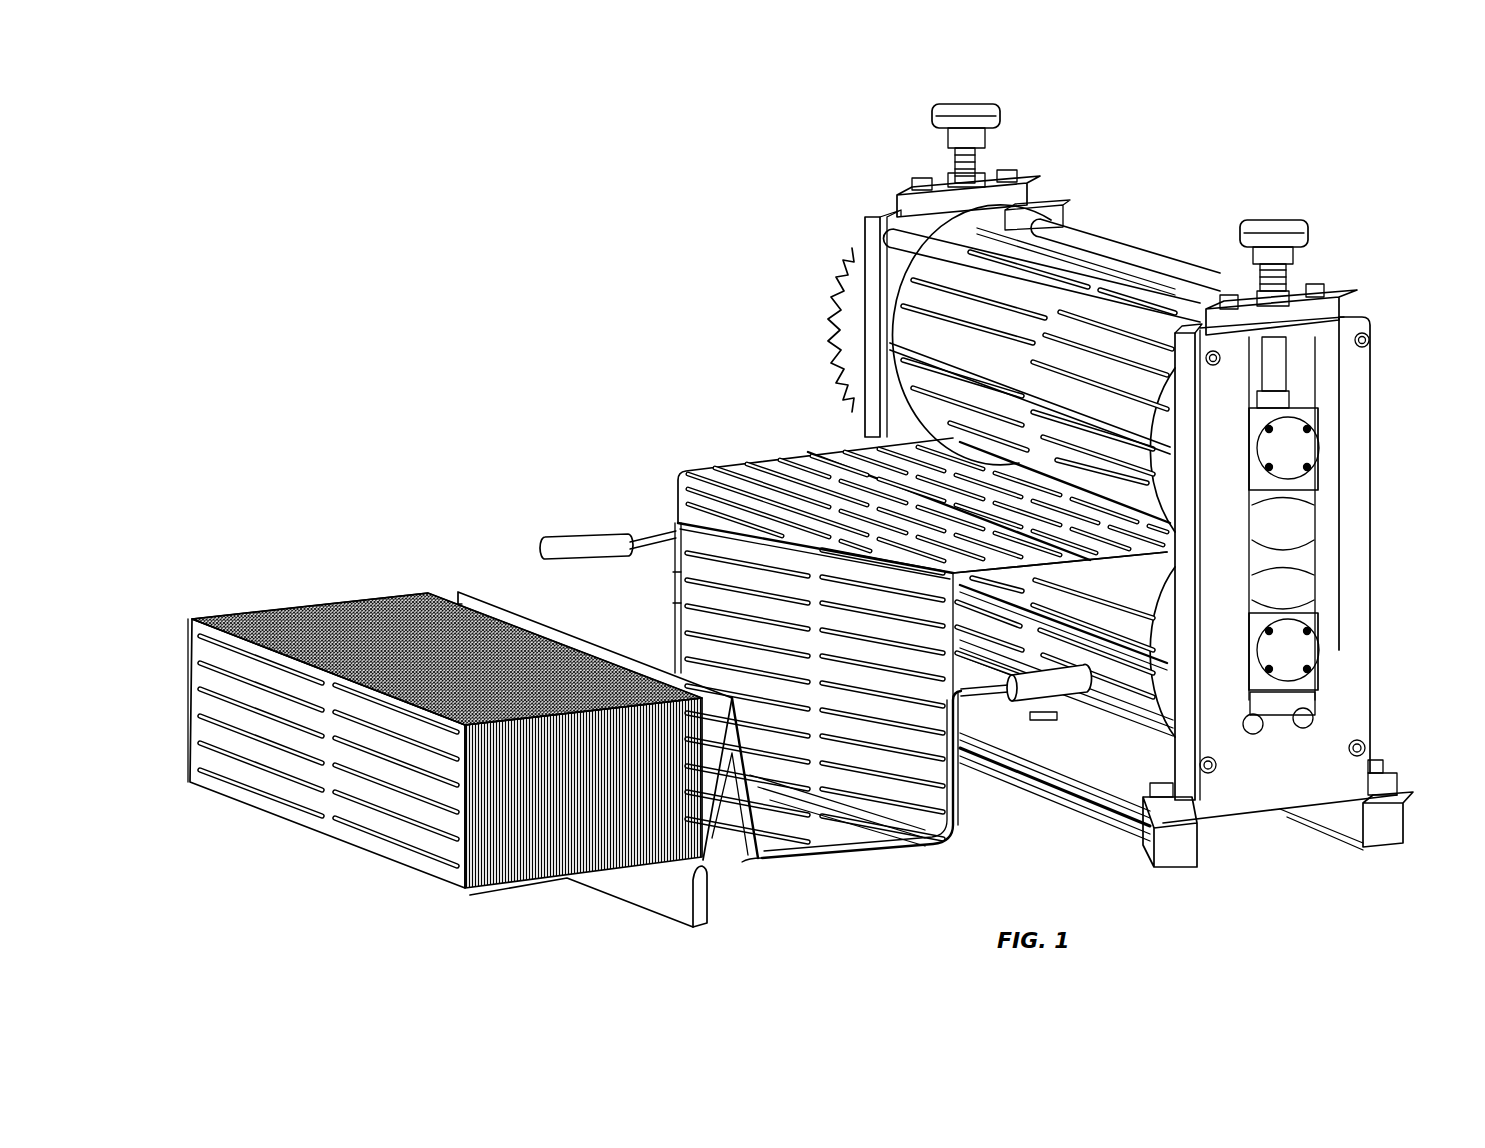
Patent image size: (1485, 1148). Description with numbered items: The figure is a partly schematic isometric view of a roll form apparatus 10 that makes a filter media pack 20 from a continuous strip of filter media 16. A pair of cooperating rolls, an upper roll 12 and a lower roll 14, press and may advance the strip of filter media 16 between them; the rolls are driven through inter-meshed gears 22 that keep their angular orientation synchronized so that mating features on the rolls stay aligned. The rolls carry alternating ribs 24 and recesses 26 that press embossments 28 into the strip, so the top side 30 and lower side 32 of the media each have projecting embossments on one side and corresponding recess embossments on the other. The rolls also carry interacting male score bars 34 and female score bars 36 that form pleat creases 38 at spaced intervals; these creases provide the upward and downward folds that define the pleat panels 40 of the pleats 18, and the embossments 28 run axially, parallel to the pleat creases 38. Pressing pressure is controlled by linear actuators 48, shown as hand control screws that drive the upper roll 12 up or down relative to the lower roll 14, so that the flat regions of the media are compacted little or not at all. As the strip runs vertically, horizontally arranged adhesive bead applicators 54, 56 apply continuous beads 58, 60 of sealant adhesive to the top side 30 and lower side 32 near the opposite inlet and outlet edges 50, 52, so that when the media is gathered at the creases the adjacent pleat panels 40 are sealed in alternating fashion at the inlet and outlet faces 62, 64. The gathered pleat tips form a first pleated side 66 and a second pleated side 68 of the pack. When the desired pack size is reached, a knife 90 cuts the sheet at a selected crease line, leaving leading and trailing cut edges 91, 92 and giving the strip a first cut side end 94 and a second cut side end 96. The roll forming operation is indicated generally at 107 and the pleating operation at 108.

The roll form apparatus 10 is at (873, 200).
The upper roll 12 is at (1100, 338).
The lower roll 14 is at (1126, 698).
The strip of filter media 16 is at (761, 450).
The pleats 18 is at (497, 587).
The filter media pack 20 is at (313, 605).
The inter-meshed gears 22 is at (836, 268).
The ribs 24 is at (1104, 332).
The recesses 26 is at (1003, 322).
The embossments 28 is at (682, 480).
The top side 30 is at (810, 470).
The lower side 32 is at (747, 864).
The male score bars 34 is at (1148, 605).
The female score bars 36 is at (1150, 405).
The pleat creases 38 is at (720, 530).
The pleat panels 40 is at (727, 838).
The linear actuators 48 is at (966, 105).
The inlet edge 50 is at (965, 690).
The outlet edge 52 is at (676, 505).
The adhesive bead applicator 54 is at (1043, 695).
The adhesive bead applicator 56 is at (580, 530).
The adhesive bead 58 is at (907, 852).
The adhesive bead 60 is at (673, 575).
The inlet face 62 is at (525, 838).
The outlet face 64 is at (208, 610).
The first pleated side 66 is at (407, 602).
The second pleated side 68 is at (318, 853).
The knife 90 is at (705, 913).
The leading cut edge 91 is at (455, 887).
The trailing cut edge 92 is at (690, 866).
The first cut side end 94 is at (328, 755).
The second cut side end 96 is at (705, 755).
The roll forming 107 is at (773, 128).
The pleating 108 is at (448, 513).